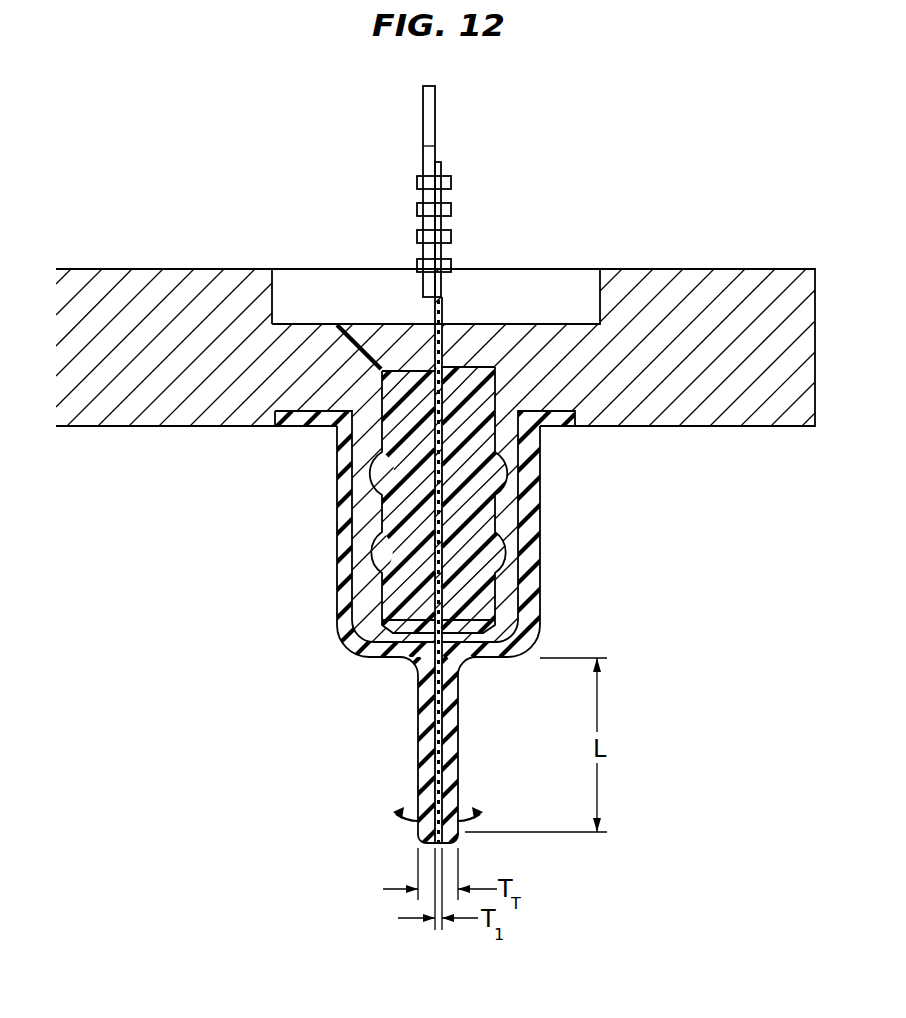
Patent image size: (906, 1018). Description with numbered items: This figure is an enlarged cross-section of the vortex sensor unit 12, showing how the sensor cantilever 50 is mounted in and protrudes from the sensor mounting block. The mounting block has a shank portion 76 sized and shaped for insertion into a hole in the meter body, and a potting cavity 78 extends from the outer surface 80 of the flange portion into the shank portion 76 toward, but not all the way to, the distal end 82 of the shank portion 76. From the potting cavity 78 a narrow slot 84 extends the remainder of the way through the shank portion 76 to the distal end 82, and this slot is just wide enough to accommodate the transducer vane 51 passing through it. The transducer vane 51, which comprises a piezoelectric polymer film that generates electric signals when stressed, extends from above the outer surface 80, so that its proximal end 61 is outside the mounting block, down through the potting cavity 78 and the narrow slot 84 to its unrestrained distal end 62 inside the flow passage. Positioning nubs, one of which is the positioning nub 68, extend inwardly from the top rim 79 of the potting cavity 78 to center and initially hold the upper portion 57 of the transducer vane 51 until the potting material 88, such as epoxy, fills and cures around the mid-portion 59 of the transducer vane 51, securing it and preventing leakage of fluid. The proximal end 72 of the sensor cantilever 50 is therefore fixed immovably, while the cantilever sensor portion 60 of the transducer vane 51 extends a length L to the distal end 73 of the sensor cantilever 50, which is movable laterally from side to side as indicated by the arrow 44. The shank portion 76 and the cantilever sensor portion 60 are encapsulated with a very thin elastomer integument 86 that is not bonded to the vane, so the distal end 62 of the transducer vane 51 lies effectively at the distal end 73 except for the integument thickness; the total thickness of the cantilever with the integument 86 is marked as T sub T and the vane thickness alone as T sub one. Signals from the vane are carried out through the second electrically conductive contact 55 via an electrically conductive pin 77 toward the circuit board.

The vortex sensor unit 12 is at (299, 212).
The arrow 44 is at (418, 823).
The sensor cantilever 50 is at (408, 779).
The transducer vane 51 is at (468, 764).
The second electrically conductive contact 55 is at (436, 118).
The upper portion of the transducer vane 57 is at (443, 338).
The mid-portion of the transducer vane 59 is at (437, 497).
The cantilever sensor portion 60 is at (444, 721).
The proximal end of the transducer vane 61 is at (441, 166).
The distal end of the transducer vane 62 is at (440, 843).
The positioning nub 68 is at (493, 320).
The proximal end of the sensor cantilever 72 is at (416, 672).
The distal end of the sensor cantilever 73 is at (420, 847).
The shank portion 76 is at (96, 428).
The electrically conductive pin 77 is at (449, 208).
The potting cavity 78 is at (395, 380).
The top rim of the potting cavity 79 is at (345, 330).
The outer surface of the flange portion 80 is at (307, 268).
The distal end of the shank portion 82 is at (380, 663).
The narrow slot 84 is at (533, 628).
The elastomer integument 86 is at (418, 728).
The potting material 88 is at (385, 325).